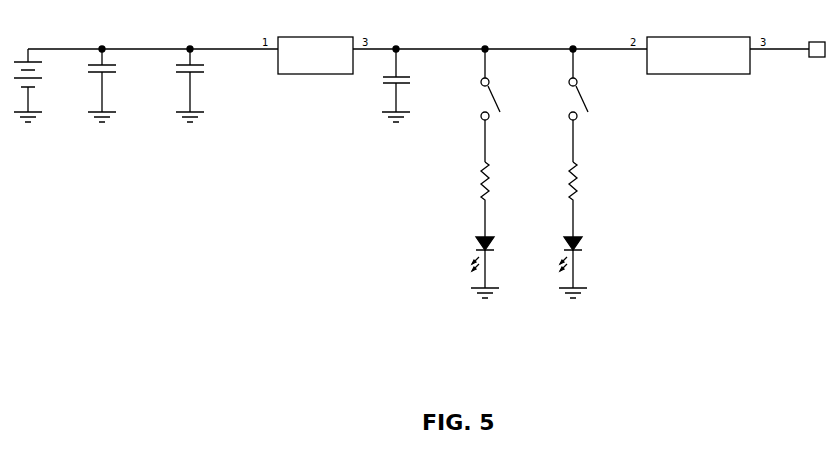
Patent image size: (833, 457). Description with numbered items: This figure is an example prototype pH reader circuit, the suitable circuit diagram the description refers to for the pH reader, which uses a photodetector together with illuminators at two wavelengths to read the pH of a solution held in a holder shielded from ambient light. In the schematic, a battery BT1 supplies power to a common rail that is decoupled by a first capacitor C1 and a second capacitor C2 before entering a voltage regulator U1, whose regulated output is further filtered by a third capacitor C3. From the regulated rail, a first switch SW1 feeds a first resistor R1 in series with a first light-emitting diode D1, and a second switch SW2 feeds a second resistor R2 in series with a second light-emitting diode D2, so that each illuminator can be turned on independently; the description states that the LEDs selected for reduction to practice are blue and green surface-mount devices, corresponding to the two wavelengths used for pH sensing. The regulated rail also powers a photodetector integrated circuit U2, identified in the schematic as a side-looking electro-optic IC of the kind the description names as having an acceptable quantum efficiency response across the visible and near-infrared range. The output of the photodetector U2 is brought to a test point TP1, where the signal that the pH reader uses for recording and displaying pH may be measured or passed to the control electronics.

The 9V battery BT1 is at (43, 85).
The 0.1uF capacitor C1 is at (122, 85).
The 0.1uF capacitor C2 is at (210, 85).
The LM340T57805 voltage regulator U1 is at (318, 57).
The 0.1uF capacitor C3 is at (419, 85).
The switch 1 SW1 is at (507, 105).
The switch 2 SW2 is at (595, 105).
The 68 ohm resistor R1 is at (499, 199).
The 120 ohm resistor R2 is at (591, 199).
The 430nm LED D1 is at (505, 262).
The 565nm LED D2 is at (593, 262).
The TSL25X/TO light-to-voltage sensor U2 is at (698, 57).
The test point TP1 is at (820, 39).